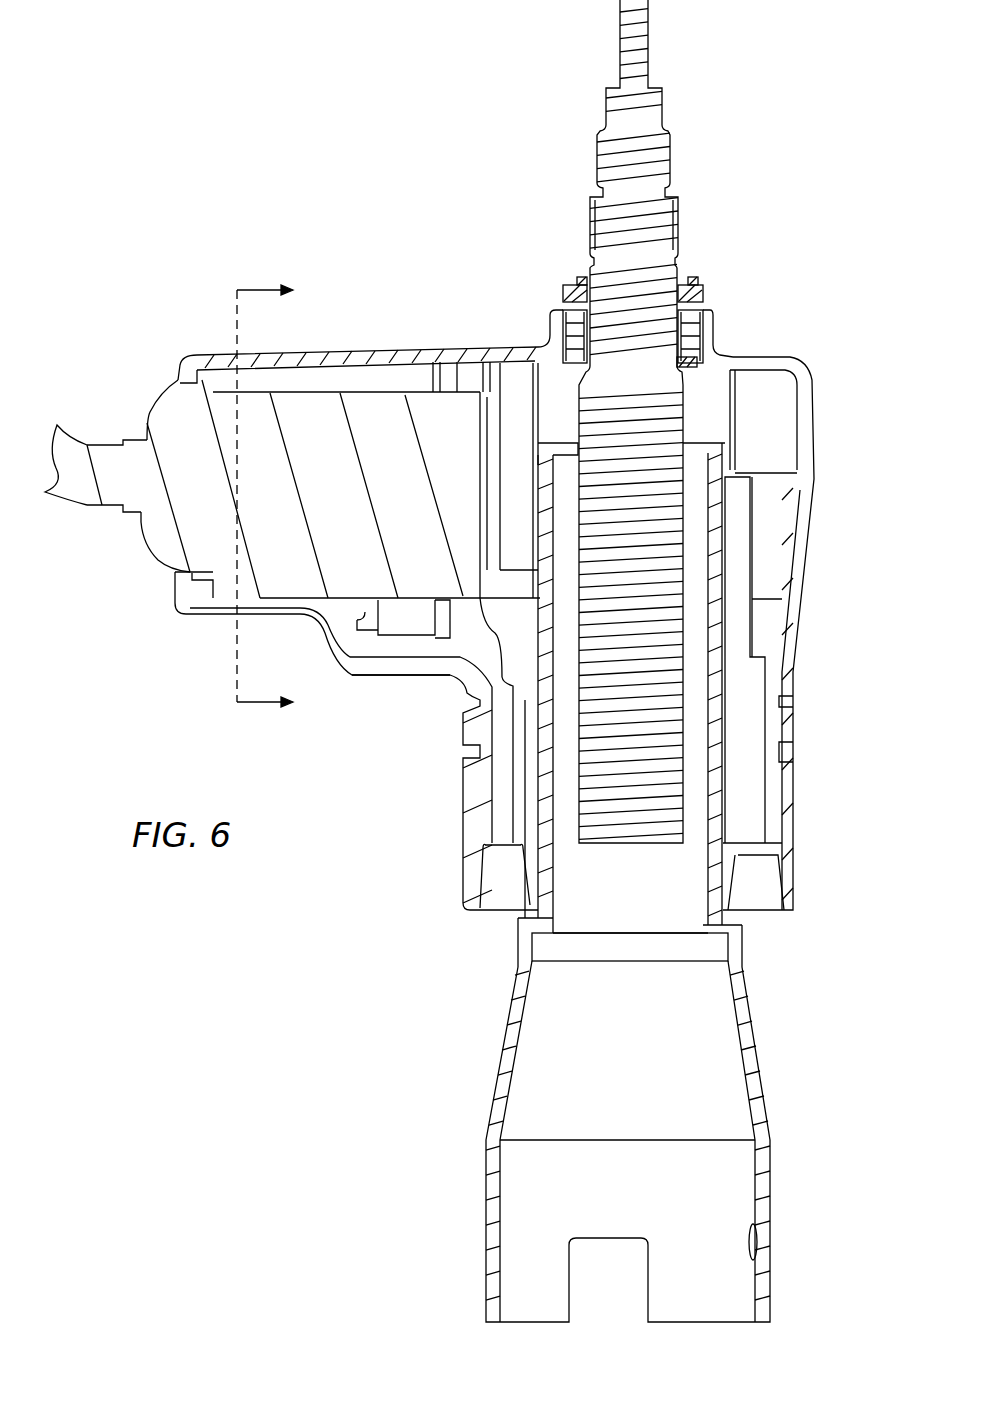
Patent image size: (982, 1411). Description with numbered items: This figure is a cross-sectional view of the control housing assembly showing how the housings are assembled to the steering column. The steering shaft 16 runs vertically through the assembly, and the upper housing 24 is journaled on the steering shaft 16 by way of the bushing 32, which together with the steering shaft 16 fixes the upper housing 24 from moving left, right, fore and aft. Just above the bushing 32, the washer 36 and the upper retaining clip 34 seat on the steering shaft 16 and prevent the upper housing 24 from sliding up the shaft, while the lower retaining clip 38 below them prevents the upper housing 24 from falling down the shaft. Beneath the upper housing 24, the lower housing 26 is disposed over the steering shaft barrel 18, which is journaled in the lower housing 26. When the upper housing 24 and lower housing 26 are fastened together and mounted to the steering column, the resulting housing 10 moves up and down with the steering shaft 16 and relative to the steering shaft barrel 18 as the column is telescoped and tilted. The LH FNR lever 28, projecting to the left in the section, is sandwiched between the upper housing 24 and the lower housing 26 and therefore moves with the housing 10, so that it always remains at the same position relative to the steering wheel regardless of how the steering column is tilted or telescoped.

The housing 10 is at (207, 694).
The steering shaft 16 is at (668, 143).
The steering shaft barrel 18 is at (752, 1033).
The upper housing 24 is at (402, 350).
The lower housing 26 is at (387, 672).
The LH FNR lever 28 is at (85, 492).
The bushing 32 is at (695, 340).
The upper retaining clip 34 is at (692, 278).
The washer 36 is at (703, 292).
The lower retaining clip 38 is at (690, 362).